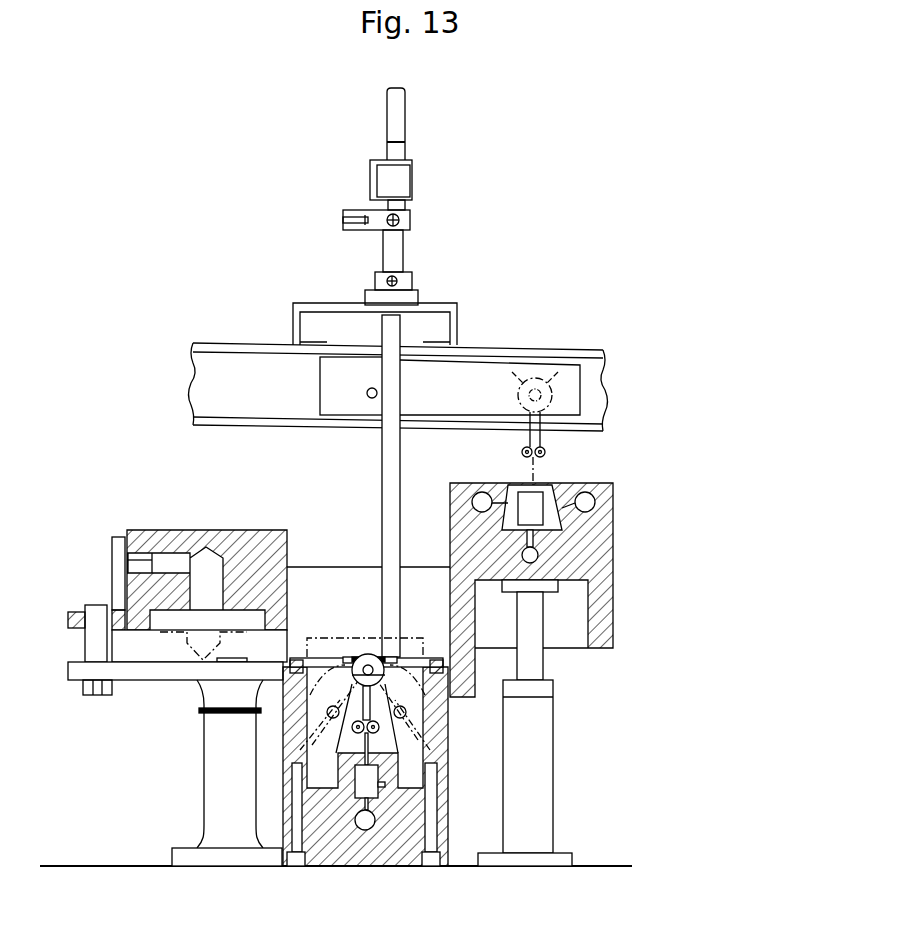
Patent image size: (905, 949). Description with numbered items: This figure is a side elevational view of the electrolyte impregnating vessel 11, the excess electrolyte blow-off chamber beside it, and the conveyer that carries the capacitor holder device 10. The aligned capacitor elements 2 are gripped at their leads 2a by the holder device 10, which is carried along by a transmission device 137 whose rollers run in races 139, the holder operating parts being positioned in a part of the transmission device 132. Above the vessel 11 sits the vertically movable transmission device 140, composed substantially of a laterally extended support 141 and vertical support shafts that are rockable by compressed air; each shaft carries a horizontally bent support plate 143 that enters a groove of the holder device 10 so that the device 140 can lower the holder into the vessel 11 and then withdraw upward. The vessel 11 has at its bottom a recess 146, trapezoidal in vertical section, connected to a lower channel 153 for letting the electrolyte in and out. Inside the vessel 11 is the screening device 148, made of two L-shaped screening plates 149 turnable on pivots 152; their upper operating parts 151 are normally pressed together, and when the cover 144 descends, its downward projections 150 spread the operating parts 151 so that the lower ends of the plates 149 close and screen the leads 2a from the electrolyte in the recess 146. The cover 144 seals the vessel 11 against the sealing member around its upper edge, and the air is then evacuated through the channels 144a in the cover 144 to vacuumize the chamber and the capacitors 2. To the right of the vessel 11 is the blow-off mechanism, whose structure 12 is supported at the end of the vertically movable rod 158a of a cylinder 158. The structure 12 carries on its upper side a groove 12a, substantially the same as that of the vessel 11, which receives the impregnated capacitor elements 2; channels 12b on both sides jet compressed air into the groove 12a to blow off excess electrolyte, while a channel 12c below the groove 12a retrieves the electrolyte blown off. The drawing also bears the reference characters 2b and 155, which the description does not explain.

The capacitor element 2 is at (590, 443).
The lead 2a is at (522, 452).
The wire end 2b is at (505, 483).
The capacitor holder device 10 is at (548, 440).
The electrolyte impregnating vessel 11 is at (452, 764).
The structure of electrolyte blow-off mechanism 12 is at (618, 588).
The groove 12a is at (567, 483).
The channel 12b is at (613, 513).
The channel 12c is at (524, 552).
The transmission device 132 is at (531, 338).
The transmission device 137 is at (595, 385).
The race 139 is at (605, 360).
The vertically movable transmission device 140 is at (418, 147).
The laterally extended support 141 is at (370, 170).
The support plate 143 is at (370, 657).
The cover 144 is at (358, 567).
The channel 144a is at (193, 530).
The recess 146 is at (385, 790).
The screening device 148 is at (283, 767).
The screening plate 149 is at (292, 815).
The projection 150 is at (180, 660).
The upper operating part 151 is at (415, 657).
The pivot 152 is at (327, 715).
The lower channel 153 is at (366, 831).
The bolt 155 is at (128, 682).
The cylinder 158 is at (562, 703).
The vertically movable rod 158a is at (547, 658).